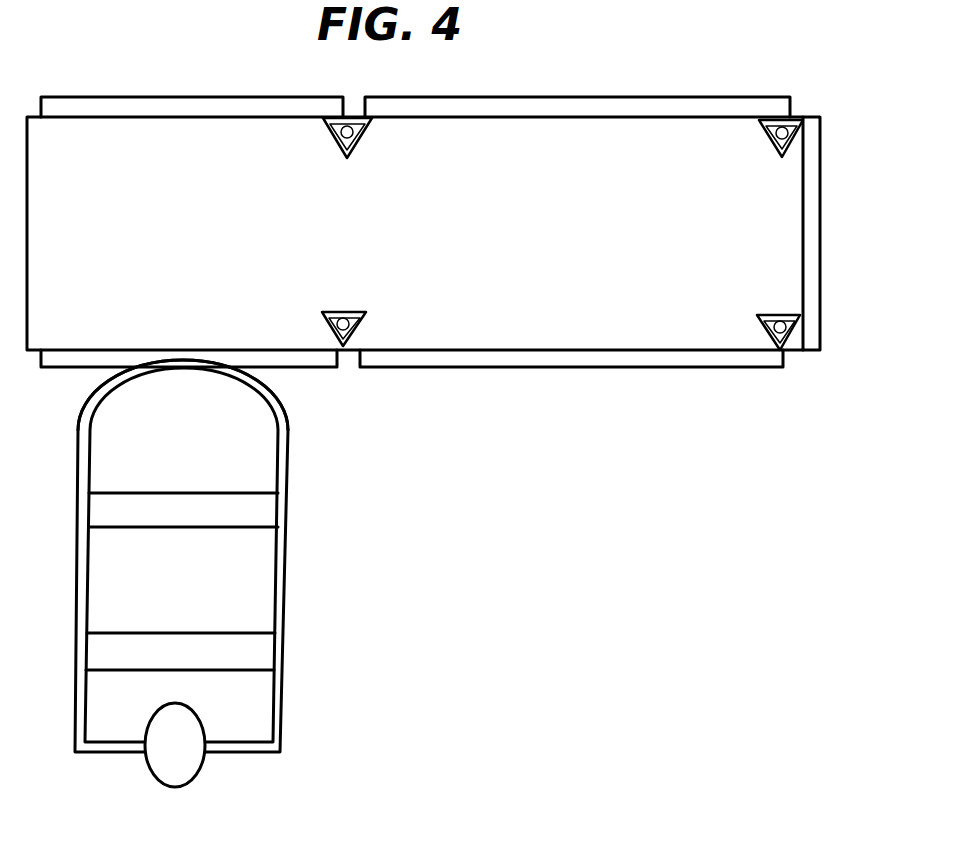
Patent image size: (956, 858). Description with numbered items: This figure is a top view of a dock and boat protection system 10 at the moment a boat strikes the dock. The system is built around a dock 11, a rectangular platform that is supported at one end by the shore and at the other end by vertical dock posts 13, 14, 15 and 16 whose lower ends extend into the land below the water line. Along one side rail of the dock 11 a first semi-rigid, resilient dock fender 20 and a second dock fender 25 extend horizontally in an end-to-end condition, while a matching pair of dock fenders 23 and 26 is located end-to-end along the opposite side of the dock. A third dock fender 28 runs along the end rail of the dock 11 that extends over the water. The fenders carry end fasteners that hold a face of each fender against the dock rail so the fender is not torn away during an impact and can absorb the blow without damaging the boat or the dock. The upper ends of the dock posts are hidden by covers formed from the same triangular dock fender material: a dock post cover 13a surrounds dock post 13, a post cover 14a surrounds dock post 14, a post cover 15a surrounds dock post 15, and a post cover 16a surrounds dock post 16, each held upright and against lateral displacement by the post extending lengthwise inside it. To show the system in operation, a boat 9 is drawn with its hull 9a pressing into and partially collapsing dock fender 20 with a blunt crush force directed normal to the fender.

The boat 9 is at (280, 575).
The hull 9a is at (262, 378).
The dock and boat protection system 10 is at (473, 95).
The dock 11 is at (218, 249).
The dock post 13 is at (350, 313).
The dock post cover 13a is at (366, 316).
The dock post 14 is at (784, 336).
The post cover 14a is at (760, 331).
The dock post 15 is at (770, 122).
The post cover 15a is at (768, 146).
The dock post 16 is at (330, 120).
The post cover 16a is at (352, 147).
The first dock fender 20 is at (308, 360).
The dock fender 23 is at (232, 99).
The second dock fender 25 is at (703, 358).
The dock fender 26 is at (566, 98).
The third dock fender 28 is at (813, 258).